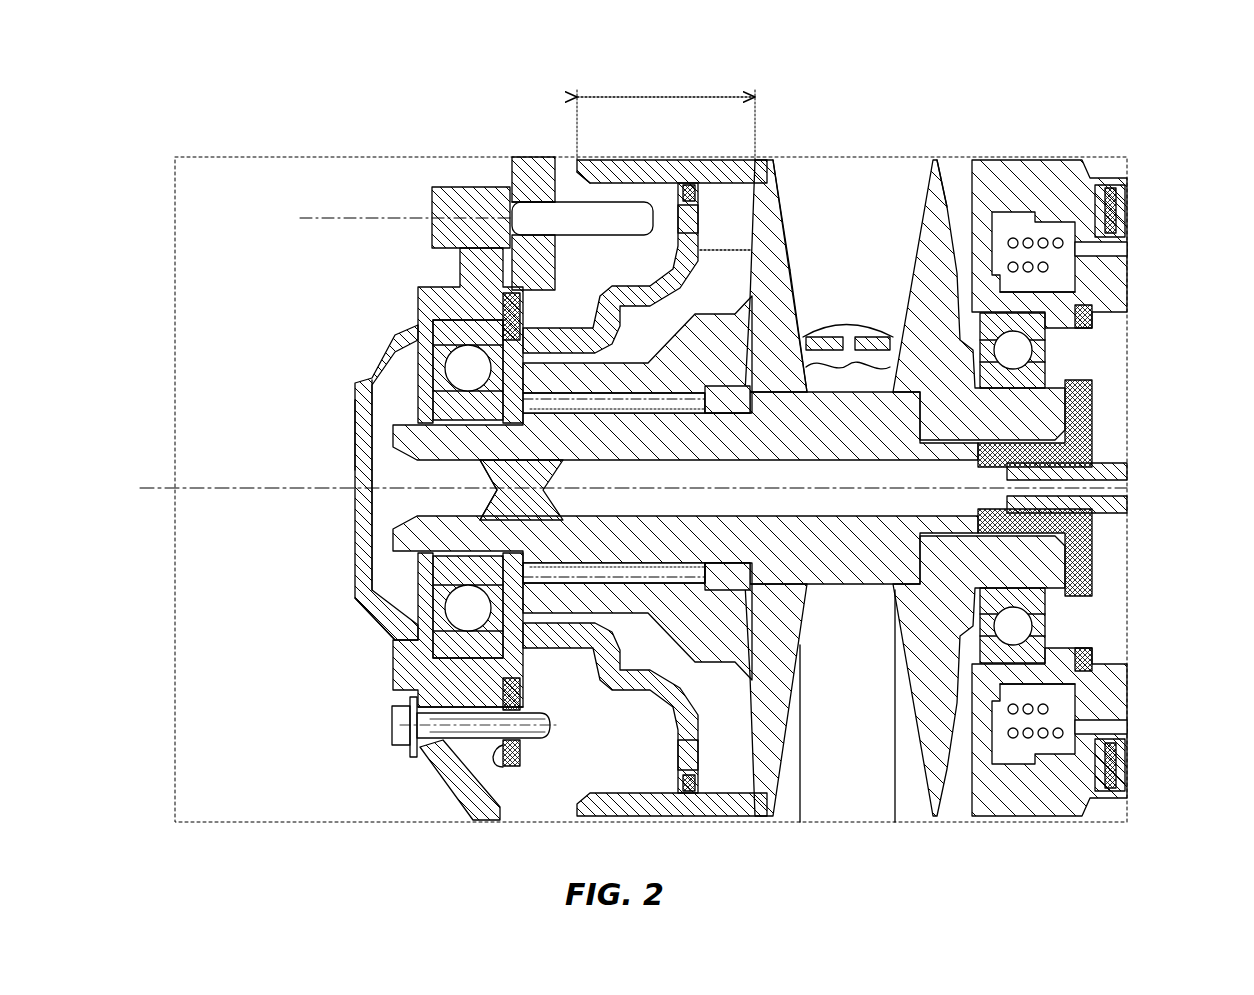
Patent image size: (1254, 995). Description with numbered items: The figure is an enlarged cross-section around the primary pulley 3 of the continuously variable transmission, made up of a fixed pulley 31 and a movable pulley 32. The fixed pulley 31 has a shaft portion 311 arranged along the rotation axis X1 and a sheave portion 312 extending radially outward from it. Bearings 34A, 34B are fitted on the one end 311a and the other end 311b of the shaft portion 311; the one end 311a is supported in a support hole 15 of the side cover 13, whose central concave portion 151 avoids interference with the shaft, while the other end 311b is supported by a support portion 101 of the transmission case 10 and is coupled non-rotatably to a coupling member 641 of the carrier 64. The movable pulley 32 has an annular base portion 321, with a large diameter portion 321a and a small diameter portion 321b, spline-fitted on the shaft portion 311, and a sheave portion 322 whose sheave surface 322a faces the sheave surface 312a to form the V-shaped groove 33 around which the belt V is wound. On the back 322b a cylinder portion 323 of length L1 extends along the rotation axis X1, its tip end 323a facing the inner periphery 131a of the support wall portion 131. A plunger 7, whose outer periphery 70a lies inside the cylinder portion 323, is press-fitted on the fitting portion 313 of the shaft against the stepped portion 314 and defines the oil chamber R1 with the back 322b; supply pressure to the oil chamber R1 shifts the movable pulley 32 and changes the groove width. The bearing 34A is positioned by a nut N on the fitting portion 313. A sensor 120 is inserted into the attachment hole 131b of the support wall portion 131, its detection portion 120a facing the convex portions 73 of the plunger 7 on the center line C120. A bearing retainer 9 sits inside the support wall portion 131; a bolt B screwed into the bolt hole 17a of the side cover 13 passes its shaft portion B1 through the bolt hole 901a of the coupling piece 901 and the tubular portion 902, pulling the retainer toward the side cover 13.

The primary pulley 3 is at (741, 434).
The fixed pulley 31 is at (741, 437).
The movable pulley 32 is at (679, 463).
The V-shaped groove 33 is at (870, 310).
The belt V is at (856, 810).
The shaft portion 311 is at (848, 422).
The one end 311a is at (371, 542).
The other end 311b is at (1088, 580).
The sheave portion 312 is at (979, 488).
The sheave surface 312a is at (905, 194).
The fitting portion 313 is at (454, 538).
The stepped portion 314 is at (506, 490).
The annular base portion 321 is at (634, 560).
The large diameter portion 321a is at (698, 578).
The small diameter portion 321b is at (610, 574).
The sheave portion 322 is at (787, 572).
The sheave surface 322a is at (768, 202).
The back 322b is at (767, 254).
The cylinder portion 323 is at (708, 172).
The tip end 323a is at (572, 164).
The plunger 7 is at (664, 306).
The outer periphery 70a is at (680, 182).
The convex portions 73 is at (672, 220).
The oil chamber R1 is at (745, 288).
The length L1 is at (666, 109).
The rotation axis X1 is at (619, 487).
The sensor 120 is at (422, 203).
The detection portion 120a is at (648, 218).
The center line C120 is at (380, 219).
The support wall portion 131 is at (512, 162).
The inner periphery 131a is at (512, 184).
The attachment hole 131b is at (520, 300).
The side cover 13 is at (347, 386).
The concave portion 151 is at (348, 448).
The nut N is at (358, 594).
The bearing 34A is at (418, 334).
The bearing 34B is at (1017, 626).
The transmission case 10 is at (1128, 814).
The support portion 101 is at (1008, 752).
The carrier 64 is at (1112, 264).
The coupling member 641 is at (996, 438).
The support hole 15 is at (436, 662).
The bolt B is at (396, 726).
The shaft portion B1 is at (544, 726).
The bearing retainer 9 is at (497, 761).
The coupling piece 901 is at (523, 754).
The bolt hole 901a is at (496, 770).
The tubular portion 902 is at (525, 708).
The bolt hole 17a is at (420, 773).